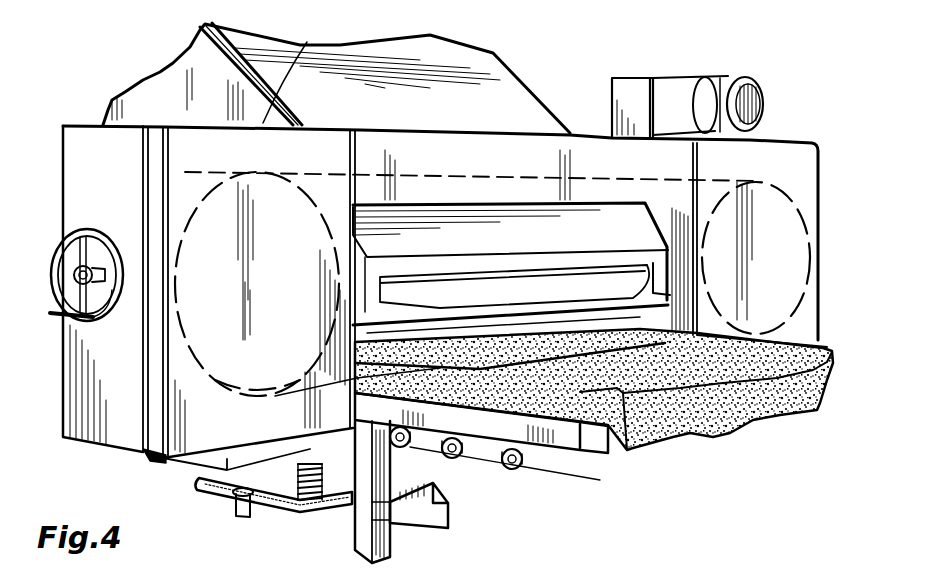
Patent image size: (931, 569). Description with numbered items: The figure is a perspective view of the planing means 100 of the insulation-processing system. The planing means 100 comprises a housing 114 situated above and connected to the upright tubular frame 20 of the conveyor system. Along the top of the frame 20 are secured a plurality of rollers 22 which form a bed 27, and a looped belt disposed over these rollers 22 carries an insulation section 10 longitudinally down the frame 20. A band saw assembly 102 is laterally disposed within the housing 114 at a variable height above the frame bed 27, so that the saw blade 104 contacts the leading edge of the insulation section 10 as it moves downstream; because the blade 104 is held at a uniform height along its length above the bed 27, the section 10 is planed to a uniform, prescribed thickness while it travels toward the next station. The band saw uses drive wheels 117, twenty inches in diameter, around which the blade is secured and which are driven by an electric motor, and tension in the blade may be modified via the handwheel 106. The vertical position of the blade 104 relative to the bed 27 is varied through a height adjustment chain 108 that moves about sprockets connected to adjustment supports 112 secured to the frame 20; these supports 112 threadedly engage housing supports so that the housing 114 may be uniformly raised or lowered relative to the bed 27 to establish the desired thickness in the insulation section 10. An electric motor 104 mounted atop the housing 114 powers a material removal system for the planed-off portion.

The planing means 100 is at (90, 110).
The housing 114 is at (247, 112).
The saw blade 104 is at (703, 77).
The band saw assembly 102 is at (197, 196).
The drive wheels 117 is at (220, 390).
The handwheel 106 is at (53, 323).
The insulation section 10 is at (633, 453).
The bed 27 is at (577, 452).
The rollers 22 is at (537, 473).
The frame 20 is at (423, 520).
The height adjustment chain 108 is at (280, 503).
The adjustment supports 112 is at (311, 508).